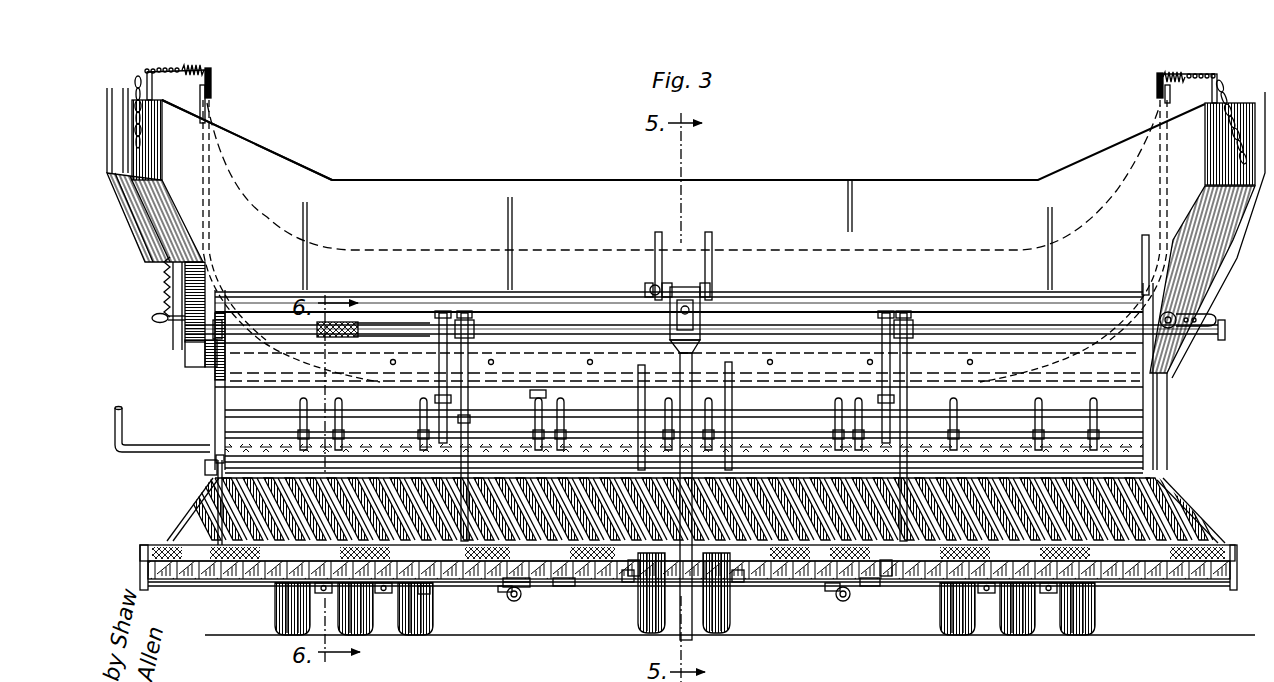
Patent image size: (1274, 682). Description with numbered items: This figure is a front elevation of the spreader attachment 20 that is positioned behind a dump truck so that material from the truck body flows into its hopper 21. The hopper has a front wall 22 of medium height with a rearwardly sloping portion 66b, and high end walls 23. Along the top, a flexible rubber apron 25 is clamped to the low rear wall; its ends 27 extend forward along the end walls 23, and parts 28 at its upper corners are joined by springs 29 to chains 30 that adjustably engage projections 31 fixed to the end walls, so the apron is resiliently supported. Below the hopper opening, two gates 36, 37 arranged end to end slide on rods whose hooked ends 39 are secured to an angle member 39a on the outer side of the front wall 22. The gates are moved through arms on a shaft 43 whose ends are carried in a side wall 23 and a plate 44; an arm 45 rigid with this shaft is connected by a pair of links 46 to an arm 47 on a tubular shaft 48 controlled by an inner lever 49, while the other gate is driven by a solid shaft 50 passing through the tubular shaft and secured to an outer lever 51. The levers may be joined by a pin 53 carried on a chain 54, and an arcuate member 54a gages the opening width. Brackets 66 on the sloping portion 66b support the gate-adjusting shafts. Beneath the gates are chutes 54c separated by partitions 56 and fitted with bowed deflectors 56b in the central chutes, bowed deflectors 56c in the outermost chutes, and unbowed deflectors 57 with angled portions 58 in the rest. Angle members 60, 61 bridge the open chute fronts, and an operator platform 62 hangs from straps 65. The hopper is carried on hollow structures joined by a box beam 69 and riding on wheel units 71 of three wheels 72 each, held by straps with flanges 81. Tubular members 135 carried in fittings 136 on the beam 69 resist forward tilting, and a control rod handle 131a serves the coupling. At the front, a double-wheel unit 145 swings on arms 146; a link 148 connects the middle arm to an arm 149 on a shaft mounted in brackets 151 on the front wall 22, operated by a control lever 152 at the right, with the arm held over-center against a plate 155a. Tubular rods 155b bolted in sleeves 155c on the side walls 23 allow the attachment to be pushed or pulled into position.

The spreader attachment 20 is at (521, 162).
The hopper 21 is at (325, 172).
The front wall 22 is at (430, 188).
The end walls 23 is at (120, 122).
The flexible sheet or apron 25 is at (572, 250).
The sheet ends 27 is at (208, 110).
The parts 28 is at (212, 80).
The springs 29 is at (204, 64).
The chains 30 is at (175, 70).
The projections 31 is at (153, 88).
The gate 36 is at (277, 432).
The gate 37 is at (782, 445).
The hooked ends 39 is at (420, 409).
The angle member 39a is at (537, 392).
The shaft 43 is at (240, 411).
The plate 44 is at (641, 368).
The arm 45 is at (466, 418).
The links 46 is at (440, 392).
The arm 47 is at (455, 313).
The tubular shaft 48 is at (378, 325).
The inner lever 49 is at (120, 184).
The solid shaft 50 is at (333, 325).
The outer lever 51 is at (107, 155).
The pin 53 is at (168, 262).
The chain 54 is at (172, 280).
The arcuate member 54a is at (190, 324).
The chutes 54c is at (600, 574).
The partitions 56 is at (870, 574).
The deflector 56b is at (634, 580).
The deflector 56c is at (203, 540).
The deflector 57 is at (792, 520).
The angled portion 58 is at (432, 580).
The angle member 60 is at (210, 467).
The angle member 61 is at (178, 540).
The platform 62 is at (424, 596).
The straps 65 is at (216, 492).
The bracket 66 is at (477, 310).
The rearwardly sloping portion 66b is at (262, 300).
The box beam 69 is at (520, 590).
The wheel unit 71 is at (272, 610).
The wheels 72 is at (292, 628).
The flanges 81 is at (382, 594).
The handle 131a is at (124, 419).
The tubular members 135 is at (515, 602).
The fittings 136 is at (505, 594).
The double-wheel unit 145 is at (668, 627).
The arms 146 is at (690, 600).
The link 148 is at (690, 395).
The arm 149 is at (698, 300).
The brackets 151 is at (660, 233).
The control lever 152 is at (1226, 318).
The plate 155a is at (648, 292).
The tubular rods 155b is at (152, 318).
The sleeves 155c is at (1190, 327).